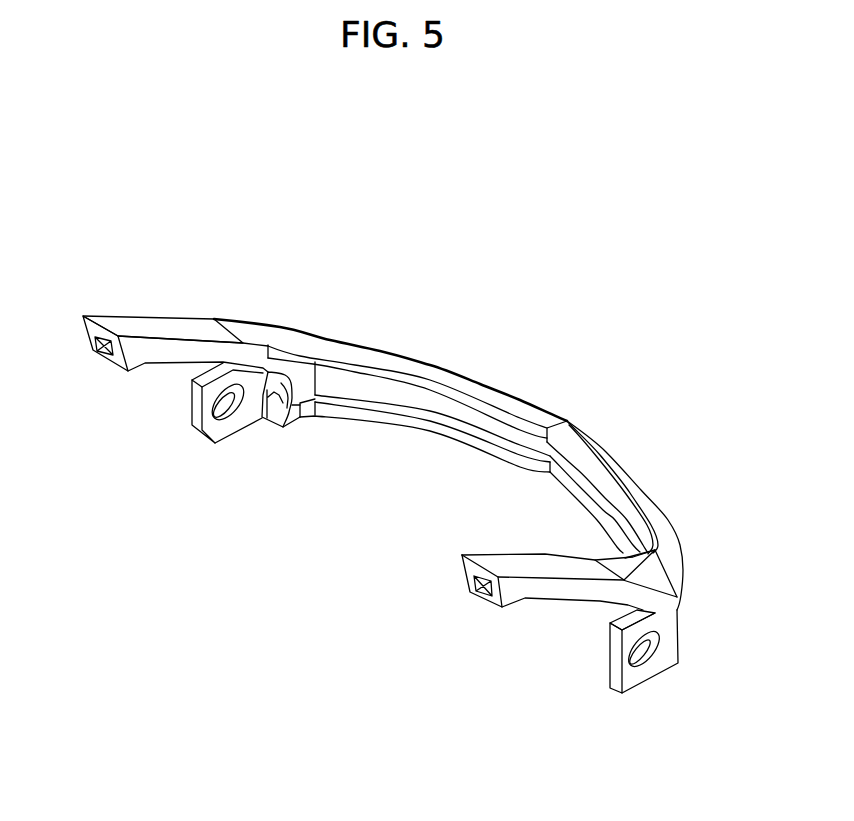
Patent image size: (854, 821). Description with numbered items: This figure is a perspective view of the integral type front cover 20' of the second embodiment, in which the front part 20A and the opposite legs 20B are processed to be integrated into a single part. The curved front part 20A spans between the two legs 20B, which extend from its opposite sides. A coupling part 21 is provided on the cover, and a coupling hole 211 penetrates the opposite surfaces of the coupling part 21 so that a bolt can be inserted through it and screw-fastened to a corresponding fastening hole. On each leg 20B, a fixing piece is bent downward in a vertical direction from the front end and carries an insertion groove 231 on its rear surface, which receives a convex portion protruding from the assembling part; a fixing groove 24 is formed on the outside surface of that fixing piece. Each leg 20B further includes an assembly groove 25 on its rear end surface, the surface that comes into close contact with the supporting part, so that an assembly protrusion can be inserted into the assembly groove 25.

The integral type front cover 20' is at (398, 499).
The front part 20A is at (518, 408).
The legs 20B is at (165, 327).
The coupling part 21 is at (657, 657).
The coupling hole 211 is at (640, 672).
The insertion groove 231 is at (273, 400).
The fixing groove 24 is at (237, 423).
The assembly groove 25 is at (476, 580).